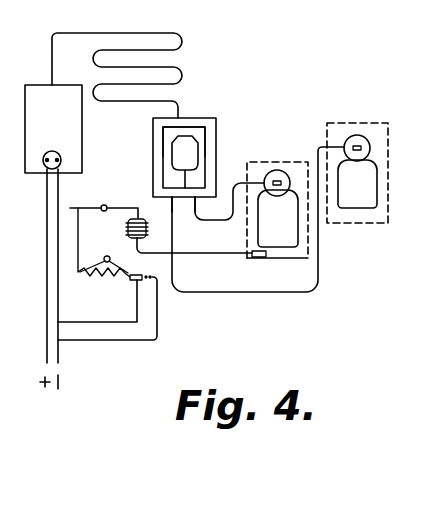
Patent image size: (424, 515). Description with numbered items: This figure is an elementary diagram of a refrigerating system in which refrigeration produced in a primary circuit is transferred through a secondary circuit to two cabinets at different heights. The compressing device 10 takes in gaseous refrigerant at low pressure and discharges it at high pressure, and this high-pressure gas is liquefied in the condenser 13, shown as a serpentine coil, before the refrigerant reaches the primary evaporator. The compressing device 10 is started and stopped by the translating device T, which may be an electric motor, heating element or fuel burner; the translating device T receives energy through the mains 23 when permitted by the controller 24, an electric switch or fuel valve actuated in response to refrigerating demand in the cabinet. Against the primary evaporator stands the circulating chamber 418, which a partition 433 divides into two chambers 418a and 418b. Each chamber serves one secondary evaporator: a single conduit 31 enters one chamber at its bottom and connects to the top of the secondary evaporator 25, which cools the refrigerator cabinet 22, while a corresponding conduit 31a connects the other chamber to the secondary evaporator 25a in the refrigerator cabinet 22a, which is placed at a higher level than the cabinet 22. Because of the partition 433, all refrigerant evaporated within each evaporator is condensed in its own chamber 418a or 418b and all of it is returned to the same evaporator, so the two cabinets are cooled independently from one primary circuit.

The compressing device 10 is at (53, 129).
The condenser 13 is at (182, 43).
The translating device T is at (56, 152).
The mains 23 is at (78, 340).
The controller 24 is at (113, 268).
The circulating chamber 418 is at (272, 159).
The chamber 418a is at (200, 132).
The chamber 418b is at (171, 131).
The partition 433 is at (185, 137).
The conduit 31 is at (212, 224).
The conduit 31a is at (232, 293).
The refrigerator cabinet 22 is at (297, 258).
The secondary evaporator 25 is at (284, 172).
The refrigerator cabinet 22a is at (372, 223).
The secondary evaporator 25a is at (368, 138).